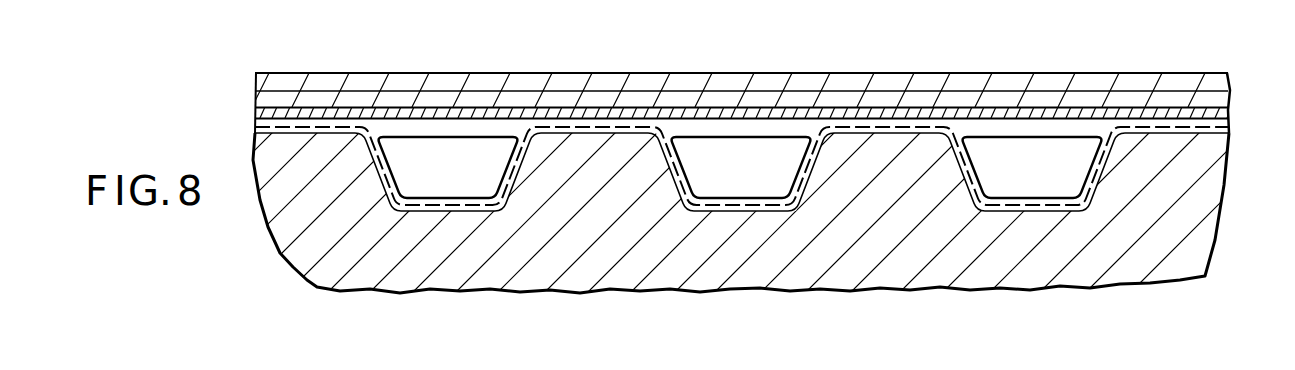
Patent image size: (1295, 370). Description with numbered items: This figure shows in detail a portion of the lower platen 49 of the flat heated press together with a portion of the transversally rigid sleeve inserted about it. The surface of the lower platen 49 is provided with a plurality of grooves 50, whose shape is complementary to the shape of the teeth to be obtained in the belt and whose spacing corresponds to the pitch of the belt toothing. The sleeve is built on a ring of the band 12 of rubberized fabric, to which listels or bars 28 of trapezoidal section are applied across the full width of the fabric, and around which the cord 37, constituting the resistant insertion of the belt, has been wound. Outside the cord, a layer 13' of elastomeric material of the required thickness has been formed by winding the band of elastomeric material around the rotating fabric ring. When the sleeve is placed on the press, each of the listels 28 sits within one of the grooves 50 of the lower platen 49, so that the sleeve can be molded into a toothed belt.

The band of rubberized fabric 12 is at (314, 127).
The layer of elastomeric material 13' is at (739, 67).
The listels or bars 28 is at (442, 157).
The cord 37 is at (797, 113).
The lower platen 49 is at (895, 262).
The grooves 50 is at (435, 211).